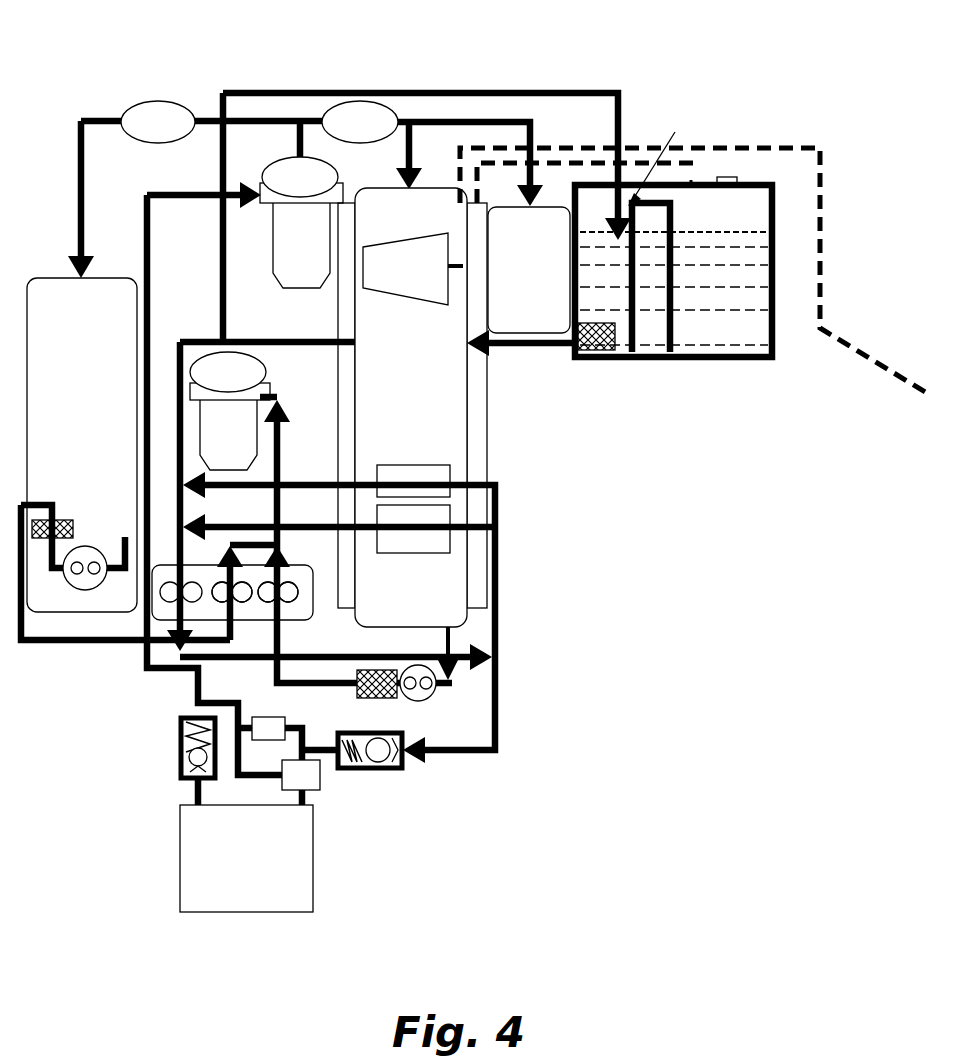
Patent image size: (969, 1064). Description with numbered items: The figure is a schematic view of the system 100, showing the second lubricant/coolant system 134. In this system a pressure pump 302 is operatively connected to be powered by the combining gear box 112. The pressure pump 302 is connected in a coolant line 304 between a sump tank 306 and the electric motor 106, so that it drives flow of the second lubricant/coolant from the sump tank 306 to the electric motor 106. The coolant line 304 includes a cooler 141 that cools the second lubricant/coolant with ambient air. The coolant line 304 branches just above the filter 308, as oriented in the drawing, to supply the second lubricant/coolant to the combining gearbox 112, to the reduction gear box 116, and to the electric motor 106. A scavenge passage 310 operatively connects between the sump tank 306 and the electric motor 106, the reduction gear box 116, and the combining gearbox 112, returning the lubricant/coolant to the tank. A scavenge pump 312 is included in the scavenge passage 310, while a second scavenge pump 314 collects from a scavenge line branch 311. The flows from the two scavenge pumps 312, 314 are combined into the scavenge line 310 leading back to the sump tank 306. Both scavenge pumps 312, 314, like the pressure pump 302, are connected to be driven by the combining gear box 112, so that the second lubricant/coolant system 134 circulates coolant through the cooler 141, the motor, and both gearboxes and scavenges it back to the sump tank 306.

The system 100 is at (475, 463).
The second lubricant/coolant system 134 is at (160, 37).
The pressure pump 302 is at (79, 190).
The coolant line 304 is at (150, 226).
The filter 308 is at (270, 250).
The scavenge passage 310 is at (529, 91).
The sump tank 306 is at (723, 345).
The reduction gear box 116 is at (101, 406).
The electric motor 106 is at (513, 346).
The combining gear box 112 is at (469, 398).
The second scavenge pump 314 is at (220, 590).
The scavenge pump 312 is at (292, 590).
The scavenge line branch 311 is at (48, 645).
The cooler 141 is at (180, 860).